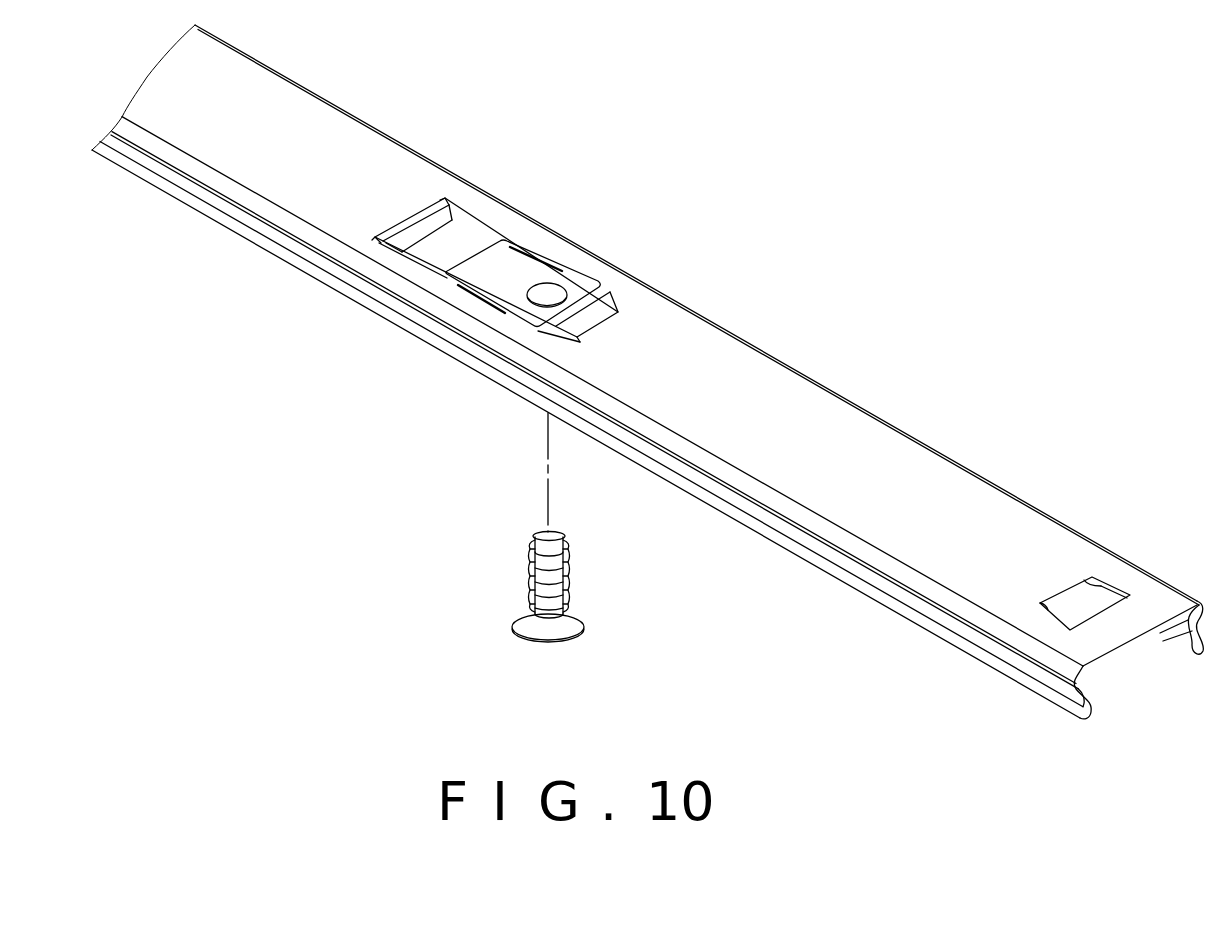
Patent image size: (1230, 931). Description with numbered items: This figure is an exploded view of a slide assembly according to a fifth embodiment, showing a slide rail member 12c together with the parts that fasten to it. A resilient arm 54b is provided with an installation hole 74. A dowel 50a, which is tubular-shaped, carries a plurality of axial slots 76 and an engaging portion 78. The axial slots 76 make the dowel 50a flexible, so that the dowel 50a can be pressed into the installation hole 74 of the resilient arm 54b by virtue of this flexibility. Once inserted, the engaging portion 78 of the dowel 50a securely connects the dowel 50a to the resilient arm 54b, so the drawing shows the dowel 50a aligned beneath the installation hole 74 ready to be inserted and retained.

The rail 12c is at (363, 143).
The resilient arm 54b is at (522, 268).
The installation hole 74 is at (563, 297).
The dowel 50a is at (559, 533).
The axial slots 76 is at (527, 552).
The engaging portion 78 is at (543, 622).